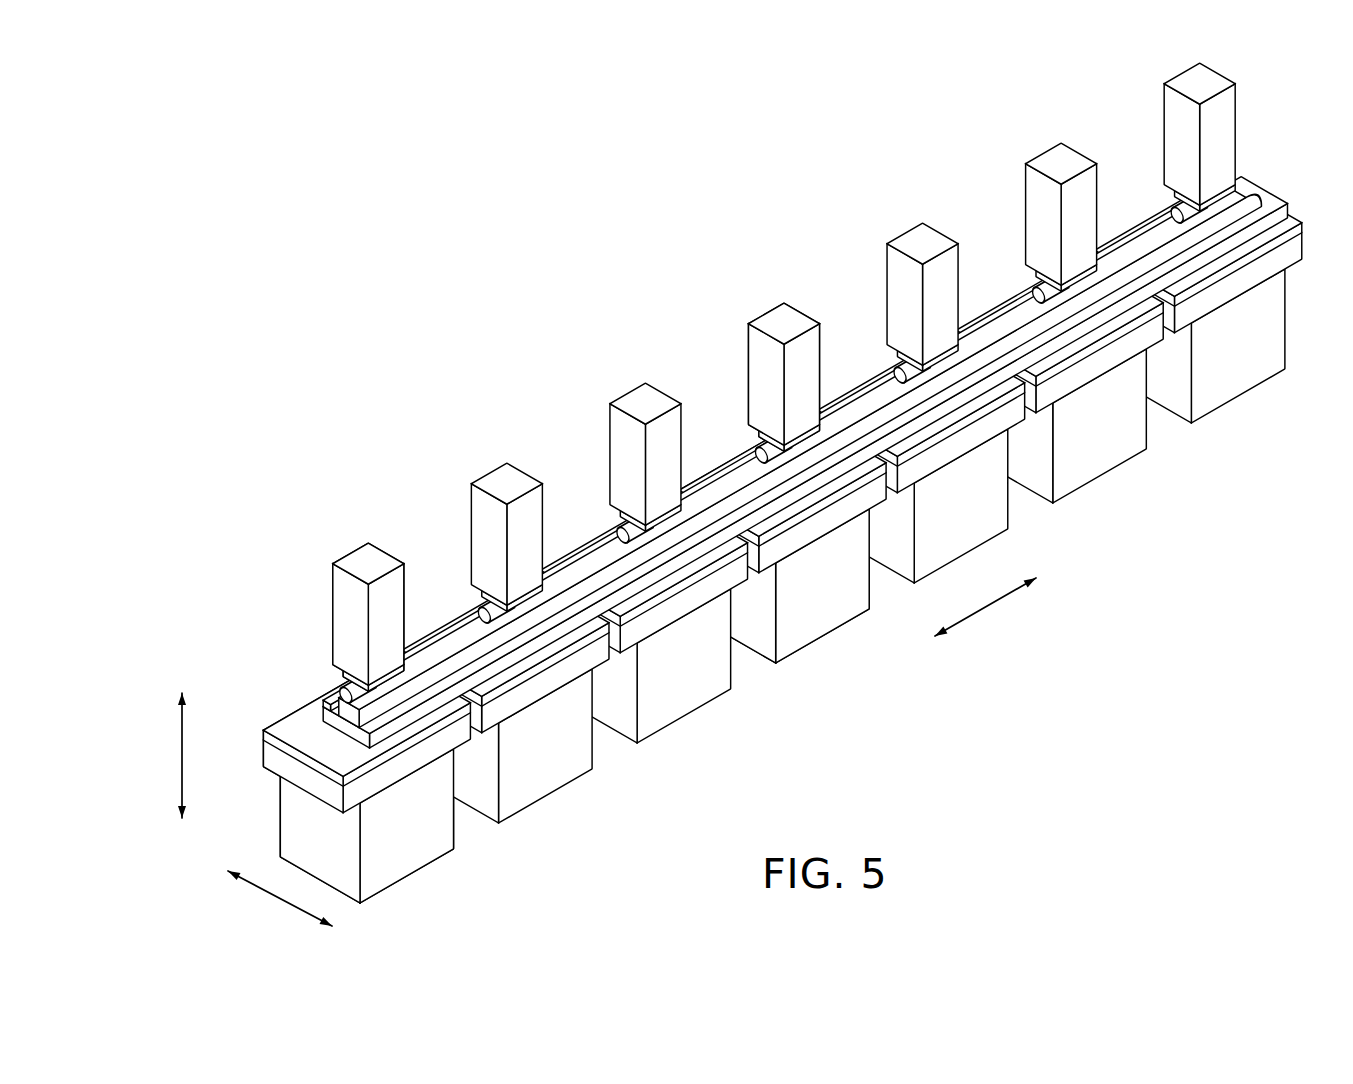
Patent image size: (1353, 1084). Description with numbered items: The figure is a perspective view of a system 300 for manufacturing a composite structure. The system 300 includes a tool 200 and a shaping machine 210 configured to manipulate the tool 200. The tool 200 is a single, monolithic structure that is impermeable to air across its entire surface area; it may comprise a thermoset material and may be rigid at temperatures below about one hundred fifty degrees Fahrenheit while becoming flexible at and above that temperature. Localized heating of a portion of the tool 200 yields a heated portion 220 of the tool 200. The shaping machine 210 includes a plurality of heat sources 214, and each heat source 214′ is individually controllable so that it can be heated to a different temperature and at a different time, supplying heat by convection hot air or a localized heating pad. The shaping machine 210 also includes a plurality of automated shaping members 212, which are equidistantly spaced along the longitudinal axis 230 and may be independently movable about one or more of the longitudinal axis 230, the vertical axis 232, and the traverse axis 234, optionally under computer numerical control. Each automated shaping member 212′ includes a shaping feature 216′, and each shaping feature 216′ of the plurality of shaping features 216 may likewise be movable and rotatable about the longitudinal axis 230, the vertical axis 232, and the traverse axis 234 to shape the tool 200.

The system 300 is at (430, 257).
The shaping machine 210 is at (440, 397).
The plurality of automated shaping members 212 is at (625, 372).
The automated shaping member 212′ is at (472, 592).
The plurality of heat sources 214 is at (620, 757).
The heat source 214′ is at (386, 737).
The plurality of shaping features 216 is at (402, 545).
The shaping feature 216′ is at (626, 533).
The heated portion 220 is at (444, 723).
The tool 200 is at (343, 738).
The longitudinal axis 230 is at (1004, 600).
The vertical axis 232 is at (178, 764).
The traverse axis 234 is at (268, 897).